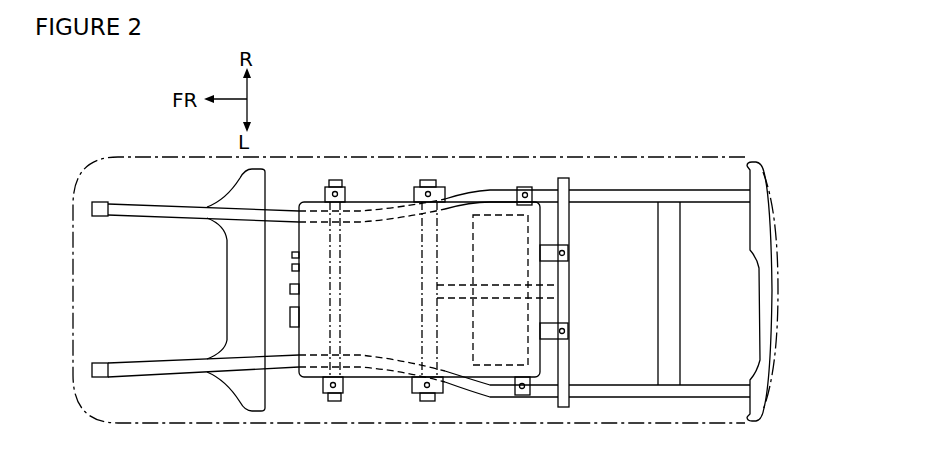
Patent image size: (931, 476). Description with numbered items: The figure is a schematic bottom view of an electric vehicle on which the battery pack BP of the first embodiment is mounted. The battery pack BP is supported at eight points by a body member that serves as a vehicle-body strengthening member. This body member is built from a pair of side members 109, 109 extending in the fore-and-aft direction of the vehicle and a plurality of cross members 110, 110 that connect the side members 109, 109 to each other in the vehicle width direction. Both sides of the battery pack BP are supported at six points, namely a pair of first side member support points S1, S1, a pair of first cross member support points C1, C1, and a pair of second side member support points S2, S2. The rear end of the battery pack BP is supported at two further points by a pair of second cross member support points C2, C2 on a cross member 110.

The side members 109 is at (602, 190).
The cross members 110 is at (227, 287).
The battery pack BP is at (368, 197).
The first side member support points S1 is at (333, 192).
The first cross member support points C1 is at (427, 192).
The second side member support points S2 is at (526, 190).
The second cross member support points C2 is at (568, 250).